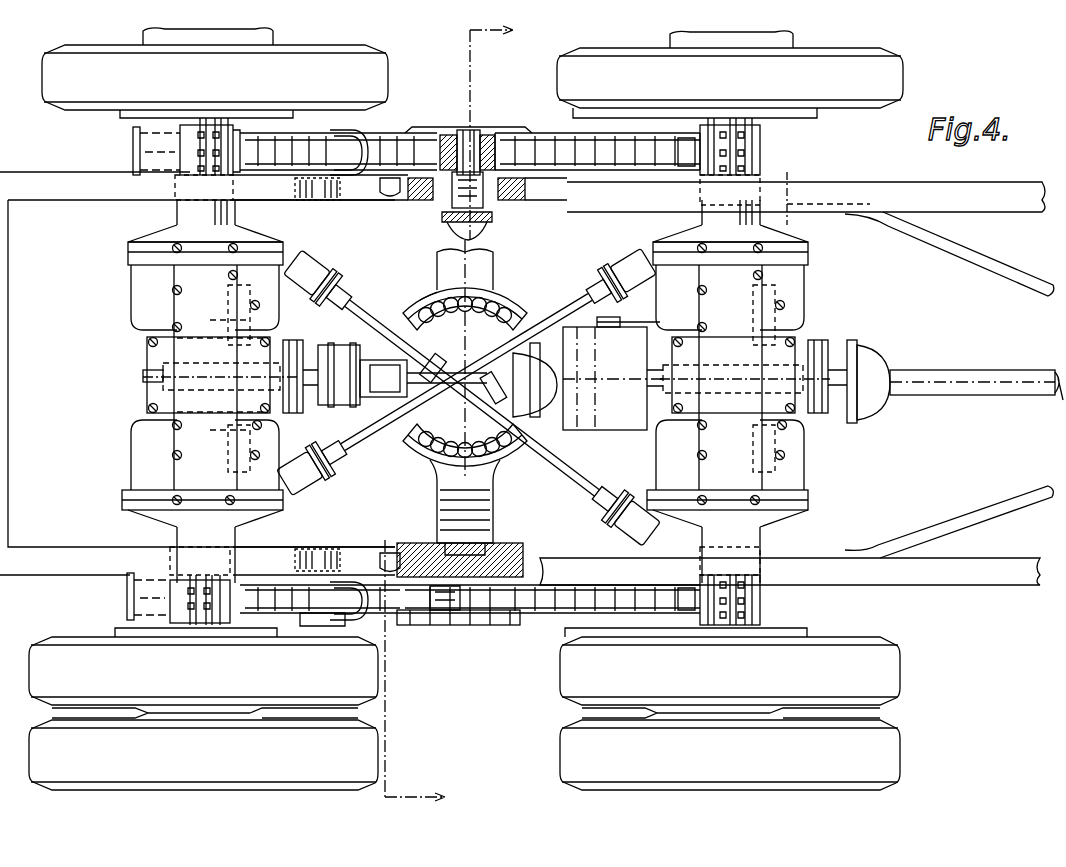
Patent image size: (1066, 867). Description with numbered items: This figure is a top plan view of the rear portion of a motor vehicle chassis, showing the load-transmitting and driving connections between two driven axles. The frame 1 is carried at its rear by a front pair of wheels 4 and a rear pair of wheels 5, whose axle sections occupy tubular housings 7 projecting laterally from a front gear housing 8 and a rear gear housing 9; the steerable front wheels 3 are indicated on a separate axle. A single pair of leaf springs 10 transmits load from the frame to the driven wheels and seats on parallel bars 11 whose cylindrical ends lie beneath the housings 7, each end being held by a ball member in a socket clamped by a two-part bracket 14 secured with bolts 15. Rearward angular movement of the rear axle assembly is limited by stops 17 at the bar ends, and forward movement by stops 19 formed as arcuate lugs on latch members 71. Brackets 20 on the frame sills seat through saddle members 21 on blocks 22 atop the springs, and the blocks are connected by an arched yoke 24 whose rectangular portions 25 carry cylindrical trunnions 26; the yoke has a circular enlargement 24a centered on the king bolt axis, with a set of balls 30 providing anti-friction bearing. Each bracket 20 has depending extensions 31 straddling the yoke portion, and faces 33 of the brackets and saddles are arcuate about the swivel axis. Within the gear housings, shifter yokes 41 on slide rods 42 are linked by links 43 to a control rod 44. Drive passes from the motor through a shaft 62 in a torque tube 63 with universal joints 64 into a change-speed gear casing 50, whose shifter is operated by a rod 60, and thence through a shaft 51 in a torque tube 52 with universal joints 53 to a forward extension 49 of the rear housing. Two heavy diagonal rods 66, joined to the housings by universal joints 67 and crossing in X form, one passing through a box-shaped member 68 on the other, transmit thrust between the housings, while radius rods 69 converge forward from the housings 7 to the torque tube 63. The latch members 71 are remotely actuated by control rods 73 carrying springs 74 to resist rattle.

The motor vehicle frame 1 is at (34, 146).
The wheels 3 is at (457, 413).
The front pair of wheels 4 is at (626, 66).
The rear pair of wheels 5 is at (288, 58).
The tubular housings 7 is at (236, 216).
The front gear housing 8 is at (820, 288).
The rear gear housing 9 is at (130, 424).
The leaf springs 10 is at (532, 150).
The parallel bars 11 is at (590, 150).
The bracket 14 is at (238, 128).
The bolts 15 is at (195, 140).
The stops 17 is at (133, 138).
The stops 19 is at (300, 620).
The brackets 20 is at (530, 550).
The saddle members 21 is at (440, 612).
The blocks 22 is at (510, 124).
The arched yoke 24 is at (486, 238).
The circular enlargement 24a is at (493, 268).
The rectangular portions 25 is at (480, 198).
The cylindrical trunnions 26 is at (458, 136).
The set of balls 30 is at (425, 300).
The depending extensions 31 is at (525, 192).
The faces 33 is at (440, 575).
The shifter yokes 41 is at (222, 318).
The slide rods 42 is at (228, 310).
The links 43 is at (790, 380).
The control rod 44 is at (143, 380).
The forward extension 49 is at (290, 340).
The change-speed gear casing 50 is at (622, 405).
The shaft 51 is at (492, 365).
The torque tube 52 is at (385, 362).
The universal joints 53 is at (340, 345).
The rod 60 is at (665, 325).
The shaft 62 is at (1050, 398).
The torque tube 63 is at (1005, 372).
The universal joints 64 is at (890, 355).
The diagonal rods 66 is at (398, 300).
The joints 67 is at (320, 260).
The box-shaped member 68 is at (440, 358).
The radius rods 69 is at (1005, 278).
The latch member 71 is at (358, 150).
The control rod 73 is at (392, 200).
The springs 74 is at (318, 202).